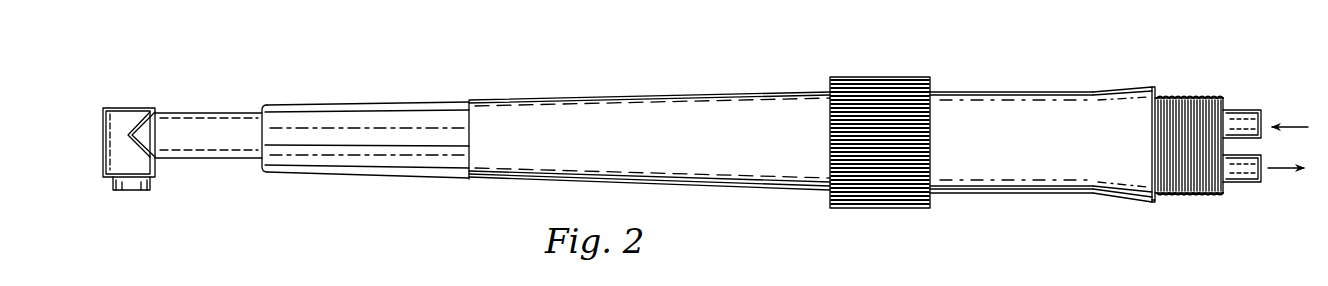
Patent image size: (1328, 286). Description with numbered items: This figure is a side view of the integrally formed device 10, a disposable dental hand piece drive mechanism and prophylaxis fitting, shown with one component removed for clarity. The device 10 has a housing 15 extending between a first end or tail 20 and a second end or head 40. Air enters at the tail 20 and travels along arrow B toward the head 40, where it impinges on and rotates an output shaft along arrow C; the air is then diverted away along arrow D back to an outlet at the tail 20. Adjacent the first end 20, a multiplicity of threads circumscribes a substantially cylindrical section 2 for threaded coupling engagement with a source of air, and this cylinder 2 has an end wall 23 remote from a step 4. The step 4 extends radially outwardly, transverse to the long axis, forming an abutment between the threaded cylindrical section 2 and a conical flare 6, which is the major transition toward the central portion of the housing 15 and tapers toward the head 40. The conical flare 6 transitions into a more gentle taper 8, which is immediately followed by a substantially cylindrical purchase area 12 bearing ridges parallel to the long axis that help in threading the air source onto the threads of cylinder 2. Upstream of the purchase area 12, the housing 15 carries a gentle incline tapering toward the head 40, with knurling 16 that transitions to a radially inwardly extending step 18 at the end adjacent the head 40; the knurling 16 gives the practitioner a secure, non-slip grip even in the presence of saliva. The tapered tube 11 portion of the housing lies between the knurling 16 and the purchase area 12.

The cylindrical section 2 is at (1195, 97).
The step 4 is at (1155, 203).
The conical flare 6 is at (1118, 90).
The taper 8 is at (1031, 90).
The device 10 is at (730, 58).
The tapered tube 11 is at (651, 93).
The purchase area 12 is at (885, 76).
The housing 15 is at (493, 209).
The knurling 16 is at (380, 104).
The radially inwardly extending step 18 is at (256, 110).
The first end 20 is at (1244, 102).
The end wall 23 is at (1262, 176).
The second end 40 is at (163, 98).
The arrow B is at (1300, 125).
The arrow D is at (1280, 165).
The arrow C is at (180, 0).